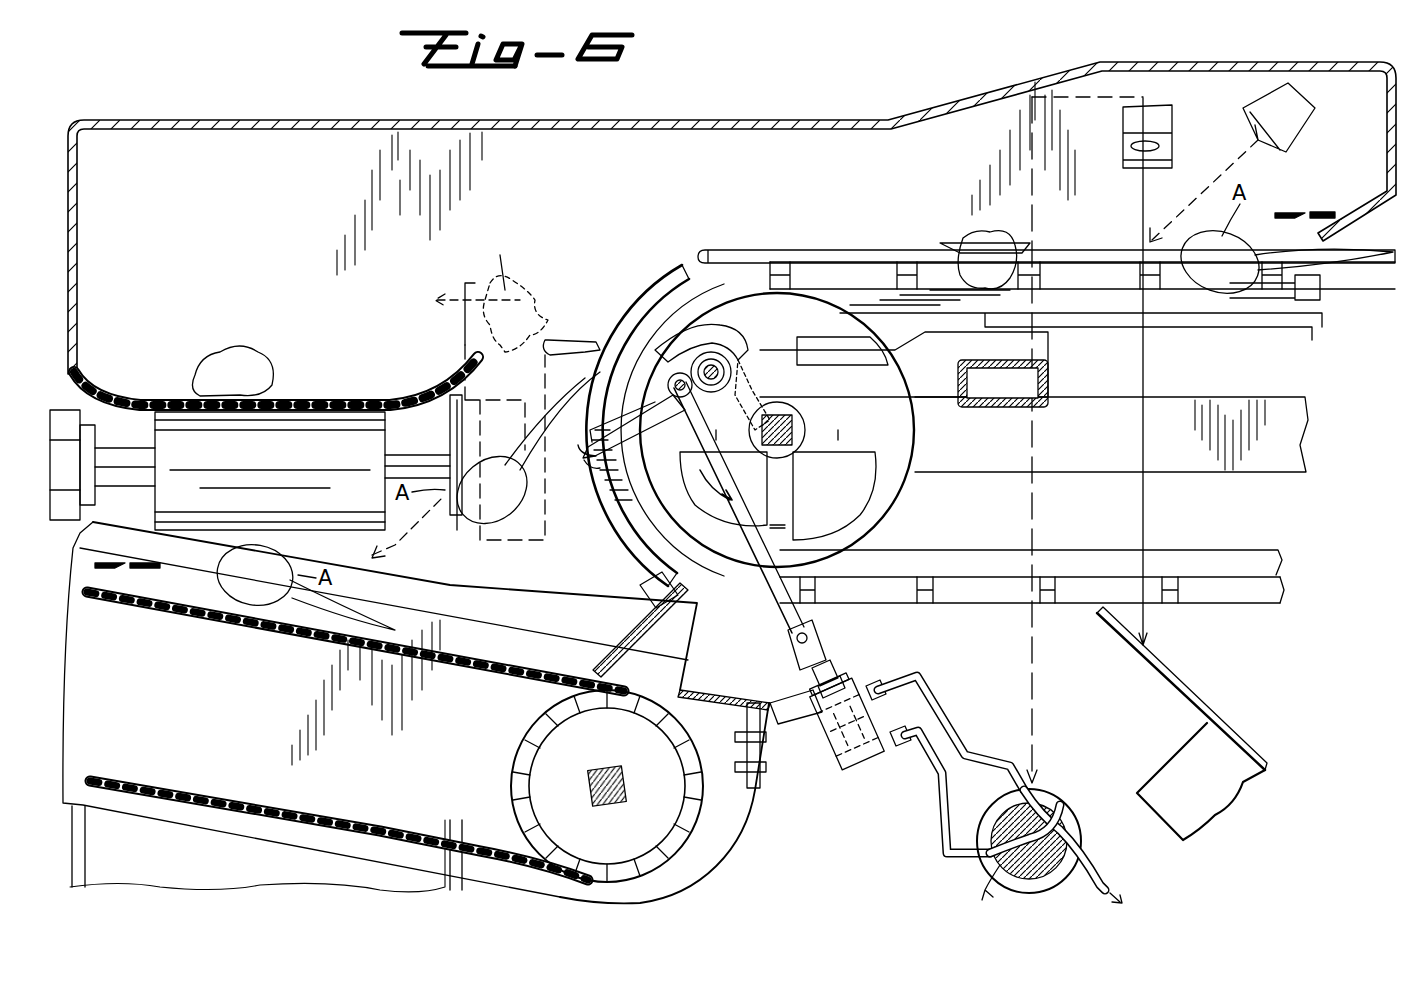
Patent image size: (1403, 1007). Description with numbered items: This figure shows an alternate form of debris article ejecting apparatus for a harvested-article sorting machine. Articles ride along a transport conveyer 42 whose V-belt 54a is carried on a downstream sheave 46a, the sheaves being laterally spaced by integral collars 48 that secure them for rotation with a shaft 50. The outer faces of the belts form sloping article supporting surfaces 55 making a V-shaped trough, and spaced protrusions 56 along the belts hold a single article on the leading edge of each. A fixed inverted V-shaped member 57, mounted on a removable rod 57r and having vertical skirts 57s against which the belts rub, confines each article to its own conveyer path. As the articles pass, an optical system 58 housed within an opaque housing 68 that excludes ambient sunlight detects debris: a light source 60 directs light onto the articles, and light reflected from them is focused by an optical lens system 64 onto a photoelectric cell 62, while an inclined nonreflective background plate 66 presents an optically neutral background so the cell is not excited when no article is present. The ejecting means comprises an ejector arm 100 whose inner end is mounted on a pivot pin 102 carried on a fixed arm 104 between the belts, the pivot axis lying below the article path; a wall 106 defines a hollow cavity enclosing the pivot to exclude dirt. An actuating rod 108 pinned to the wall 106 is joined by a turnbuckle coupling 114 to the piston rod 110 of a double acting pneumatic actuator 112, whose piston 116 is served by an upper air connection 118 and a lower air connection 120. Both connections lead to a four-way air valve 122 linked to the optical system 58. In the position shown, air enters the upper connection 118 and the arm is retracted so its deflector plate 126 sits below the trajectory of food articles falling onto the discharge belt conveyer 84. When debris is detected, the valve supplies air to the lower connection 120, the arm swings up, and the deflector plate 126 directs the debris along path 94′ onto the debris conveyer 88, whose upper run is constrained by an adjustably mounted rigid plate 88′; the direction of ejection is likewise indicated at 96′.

The opaque housing 68 is at (1240, 68).
The photoelectric cell 62 is at (1172, 112).
The optical lens system 64 is at (1160, 146).
The optical system 58 is at (1110, 158).
The light source 60 is at (1300, 110).
The inverted V-shaped member 57 is at (958, 242).
The article supporting surfaces 55 is at (1050, 262).
The rod 57r is at (722, 252).
The spaced protrusions 56 is at (895, 276).
The skirts 57s is at (1322, 286).
The transport conveyer 42 is at (1300, 318).
The V-belt 54a is at (1190, 330).
The fixed arm 104 is at (904, 369).
The downstream sheave 46a is at (896, 499).
The integral collars 48 is at (806, 430).
The shaft 50 is at (793, 447).
The ejector arm 100 is at (590, 324).
The wall 106 is at (725, 328).
The pivot pin 102 is at (722, 358).
The deflector plate 126 is at (580, 455).
The actuating rod 108 is at (758, 546).
The path 94′ is at (518, 292).
The debris conveyer 88 is at (136, 383).
The rigid plate 88′ is at (425, 402).
The ejection path 96′ is at (395, 528).
The discharge belt conveyer 84 is at (505, 656).
The piston rod 110 is at (800, 686).
The turnbuckle coupling 114 is at (838, 668).
The double acting pneumatic actuator 112 is at (835, 760).
The upper air connection 118 is at (866, 700).
The lower air connection 120 is at (902, 746).
The piston 116 is at (876, 718).
The four-way air valve 122 is at (1082, 842).
The background plate 66 is at (1172, 672).